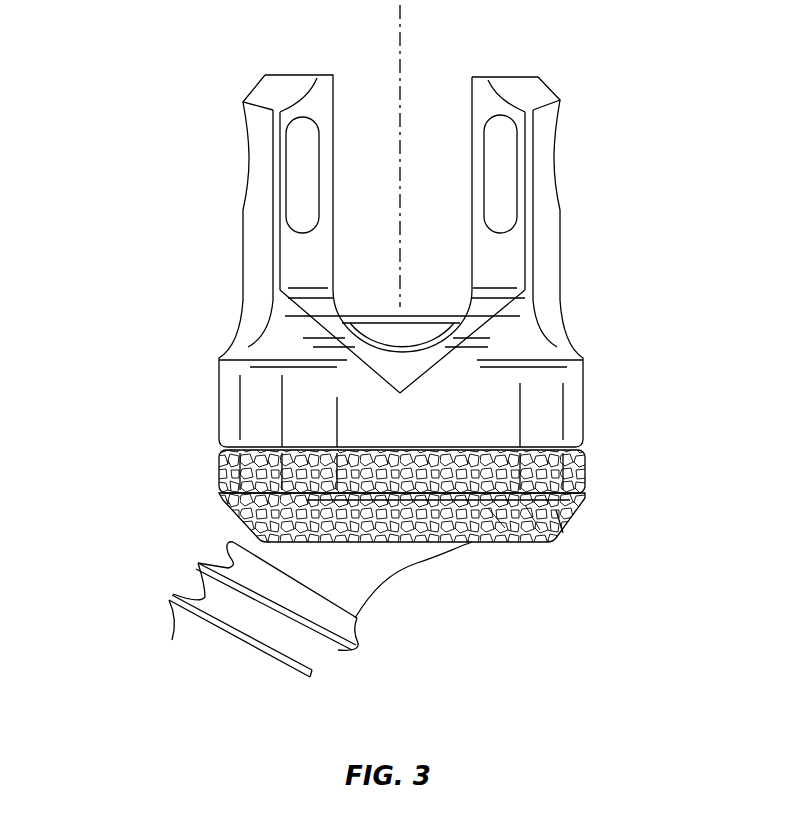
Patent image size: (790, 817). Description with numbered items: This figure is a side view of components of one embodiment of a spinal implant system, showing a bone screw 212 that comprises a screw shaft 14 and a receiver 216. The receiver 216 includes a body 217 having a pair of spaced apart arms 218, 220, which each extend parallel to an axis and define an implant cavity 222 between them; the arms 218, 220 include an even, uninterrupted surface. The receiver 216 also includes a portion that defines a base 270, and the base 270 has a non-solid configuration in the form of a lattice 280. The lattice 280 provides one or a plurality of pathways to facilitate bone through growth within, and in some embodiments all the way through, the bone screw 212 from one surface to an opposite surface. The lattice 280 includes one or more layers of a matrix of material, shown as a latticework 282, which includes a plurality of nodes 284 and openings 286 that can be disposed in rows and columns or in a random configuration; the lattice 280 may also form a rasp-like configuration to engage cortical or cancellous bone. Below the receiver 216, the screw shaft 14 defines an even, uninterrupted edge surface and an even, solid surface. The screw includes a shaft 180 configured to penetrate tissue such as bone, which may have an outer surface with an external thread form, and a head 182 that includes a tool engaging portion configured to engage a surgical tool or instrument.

The bone screw 212 is at (110, 128).
The receiver 216 is at (608, 257).
The body 217 is at (533, 362).
The arm 218 is at (260, 142).
The arm 220 is at (545, 127).
The implant cavity 222 is at (448, 105).
The base 270 is at (587, 473).
The lattice 280 is at (587, 507).
The latticework 282 is at (557, 512).
The nodes 284 is at (532, 520).
The openings 286 is at (497, 523).
The shaft 180 is at (279, 657).
The head 182 is at (415, 553).
The screw shaft 14 is at (458, 592).